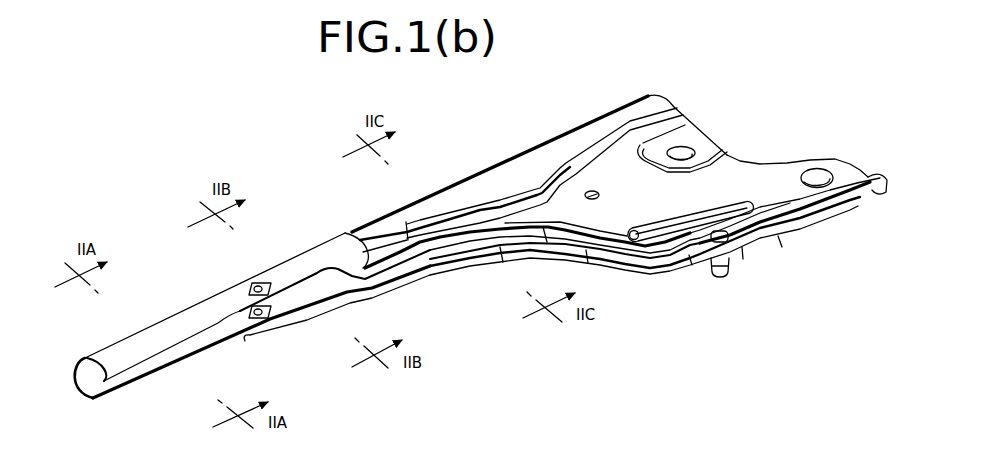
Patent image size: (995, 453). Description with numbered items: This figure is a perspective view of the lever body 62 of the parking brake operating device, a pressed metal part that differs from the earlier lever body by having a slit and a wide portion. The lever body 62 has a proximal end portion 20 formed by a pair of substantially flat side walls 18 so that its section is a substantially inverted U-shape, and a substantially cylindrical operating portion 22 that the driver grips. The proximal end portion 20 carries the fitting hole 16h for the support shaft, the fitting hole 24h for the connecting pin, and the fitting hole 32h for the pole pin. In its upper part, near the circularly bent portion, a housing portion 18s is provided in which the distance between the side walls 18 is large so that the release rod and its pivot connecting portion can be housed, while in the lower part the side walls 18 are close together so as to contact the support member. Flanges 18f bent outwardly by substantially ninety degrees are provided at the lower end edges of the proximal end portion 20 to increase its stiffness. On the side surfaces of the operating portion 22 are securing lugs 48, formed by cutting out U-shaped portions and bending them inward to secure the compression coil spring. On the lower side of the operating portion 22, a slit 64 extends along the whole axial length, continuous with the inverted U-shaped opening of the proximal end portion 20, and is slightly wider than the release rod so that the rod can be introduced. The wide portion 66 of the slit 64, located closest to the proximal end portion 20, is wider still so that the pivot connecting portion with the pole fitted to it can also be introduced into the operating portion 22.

The fitting hole for the support shaft 16h is at (818, 168).
The side walls 18 is at (763, 180).
The housing portion 18s is at (502, 182).
The flanges 18f is at (542, 240).
The proximal end portion 20 is at (667, 298).
The operating portion 22 is at (155, 337).
The fitting hole for the connecting pin 24h is at (675, 146).
The fitting hole for the pole pin 32h is at (597, 192).
The securing lugs 48 is at (262, 283).
The lever body 62 is at (318, 172).
The slit 64 is at (167, 373).
The wide portion 66 is at (305, 325).